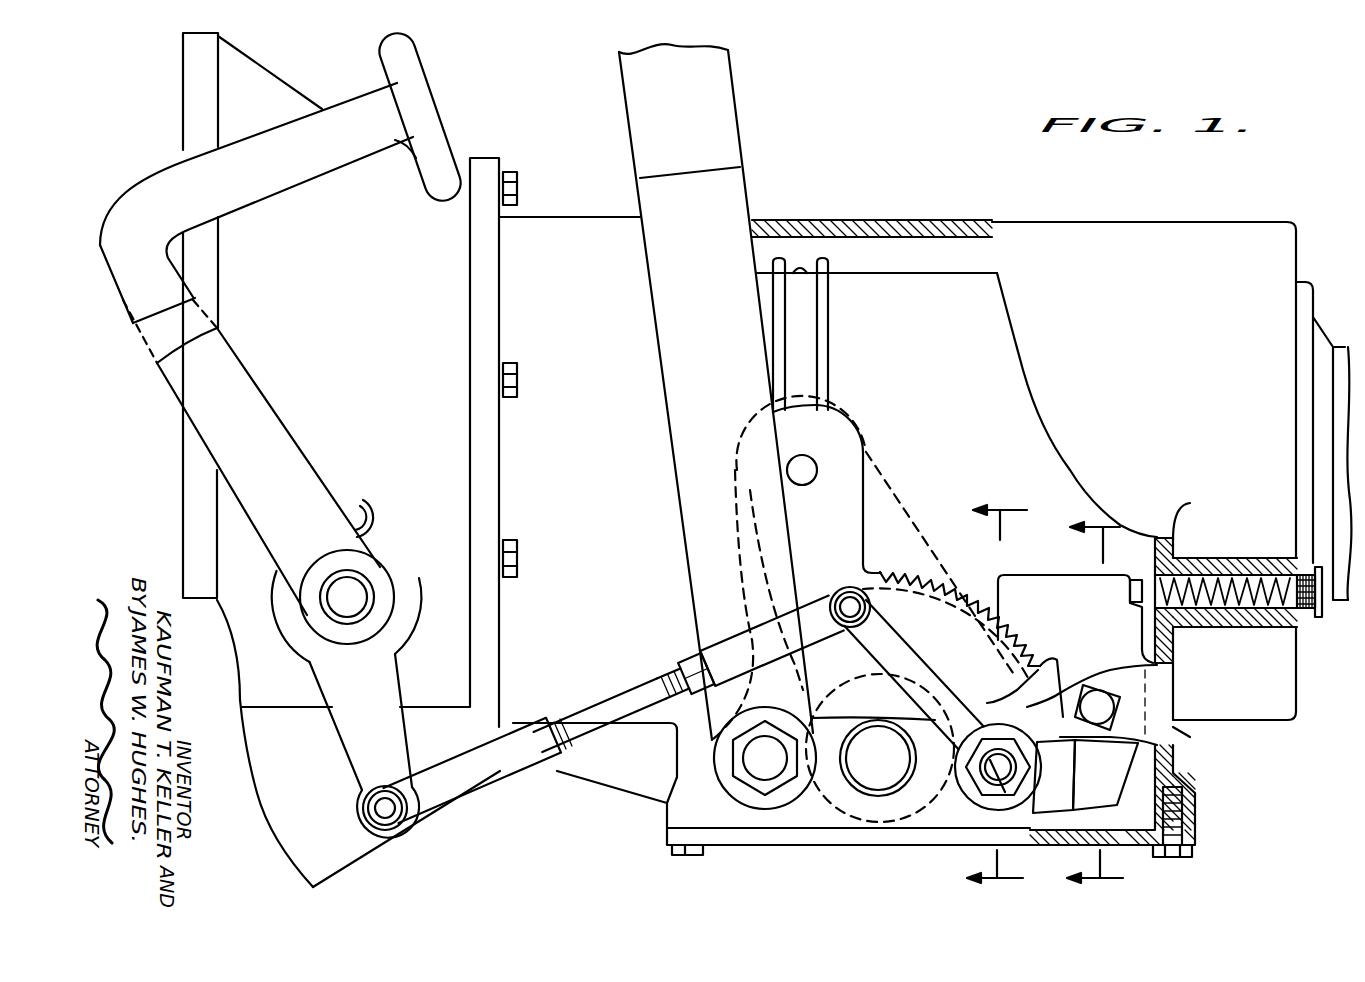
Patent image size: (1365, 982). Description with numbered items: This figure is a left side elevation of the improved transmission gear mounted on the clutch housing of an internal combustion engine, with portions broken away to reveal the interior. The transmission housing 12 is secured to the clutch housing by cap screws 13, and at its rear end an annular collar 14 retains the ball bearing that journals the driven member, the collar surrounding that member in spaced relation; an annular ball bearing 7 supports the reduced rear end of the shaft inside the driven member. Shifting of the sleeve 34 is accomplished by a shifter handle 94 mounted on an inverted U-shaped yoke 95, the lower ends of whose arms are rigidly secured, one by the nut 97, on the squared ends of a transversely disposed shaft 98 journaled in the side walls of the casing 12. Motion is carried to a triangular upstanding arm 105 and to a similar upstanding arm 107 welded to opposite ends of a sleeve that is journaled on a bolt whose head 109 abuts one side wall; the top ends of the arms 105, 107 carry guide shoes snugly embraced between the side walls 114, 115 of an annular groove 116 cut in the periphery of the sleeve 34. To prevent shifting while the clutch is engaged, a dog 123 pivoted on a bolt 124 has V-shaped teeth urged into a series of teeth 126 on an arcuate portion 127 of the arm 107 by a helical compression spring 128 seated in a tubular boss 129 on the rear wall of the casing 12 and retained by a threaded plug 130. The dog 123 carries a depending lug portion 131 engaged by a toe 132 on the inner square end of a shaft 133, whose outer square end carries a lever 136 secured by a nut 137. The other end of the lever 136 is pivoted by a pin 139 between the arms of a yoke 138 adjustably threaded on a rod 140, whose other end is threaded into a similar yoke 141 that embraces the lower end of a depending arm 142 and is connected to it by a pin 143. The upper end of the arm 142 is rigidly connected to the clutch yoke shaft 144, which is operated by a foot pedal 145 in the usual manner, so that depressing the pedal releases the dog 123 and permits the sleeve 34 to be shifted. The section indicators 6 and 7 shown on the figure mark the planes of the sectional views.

The transmission housing 12 is at (1144, 471).
The cap screws 13 is at (522, 378).
The annular collar 14 is at (1330, 412).
The sleeve 34 is at (706, 580).
The shifter handle 94 is at (713, 73).
The yoke 95 is at (735, 213).
The nut 97 is at (753, 737).
The shaft 98 is at (765, 758).
The upstanding arm 105 is at (886, 478).
The upstanding arm 107 is at (827, 489).
The head 109 is at (878, 758).
The side wall 114 is at (790, 267).
The side wall 115 is at (831, 262).
The annular groove 116 is at (800, 272).
The dog 123 is at (1075, 619).
The bolt 124 is at (1173, 733).
The teeth 126 is at (967, 594).
The arcuate portion 127 is at (920, 588).
The helical compression spring 128 is at (1208, 603).
The tubular boss 129 is at (1277, 628).
The threaded plug 130 is at (1320, 607).
The depending lug portion 131 is at (1108, 790).
The toe 132 is at (1063, 783).
The shaft 133 is at (985, 795).
The lever 136 is at (930, 672).
The nut 137 is at (1008, 805).
The yoke 138 is at (737, 640).
The pin 139 is at (858, 615).
The rod 140 is at (600, 708).
The yoke 141 is at (507, 745).
The depending arm 142 is at (378, 696).
The pin 143 is at (375, 802).
The clutch yoke shaft 144 is at (357, 594).
The foot pedal 145 is at (243, 167).
The section line 6 is at (997, 694).
The annular ball bearing 7 is at (1095, 702).